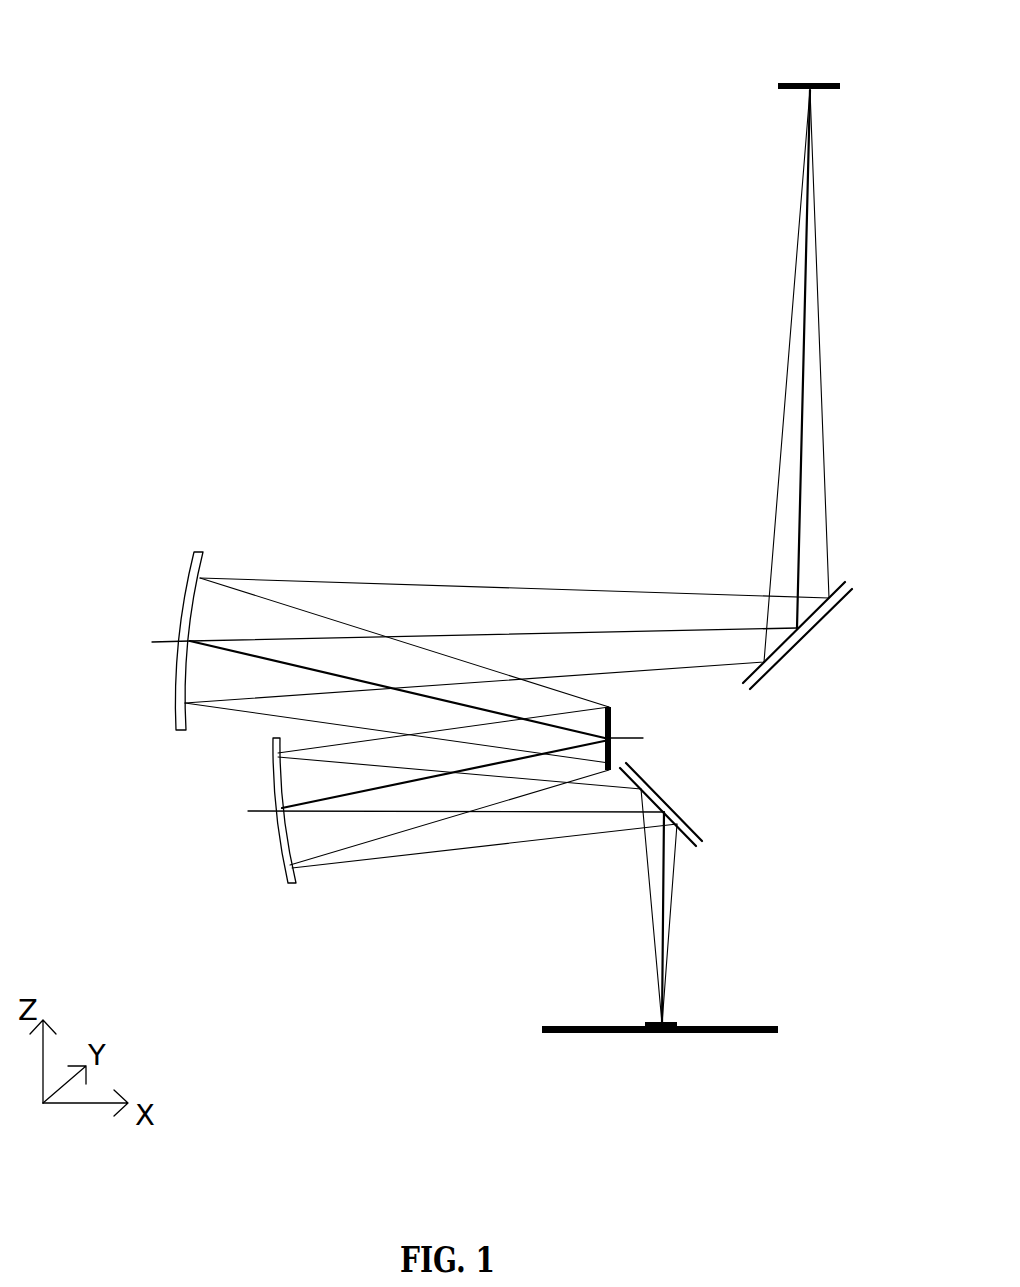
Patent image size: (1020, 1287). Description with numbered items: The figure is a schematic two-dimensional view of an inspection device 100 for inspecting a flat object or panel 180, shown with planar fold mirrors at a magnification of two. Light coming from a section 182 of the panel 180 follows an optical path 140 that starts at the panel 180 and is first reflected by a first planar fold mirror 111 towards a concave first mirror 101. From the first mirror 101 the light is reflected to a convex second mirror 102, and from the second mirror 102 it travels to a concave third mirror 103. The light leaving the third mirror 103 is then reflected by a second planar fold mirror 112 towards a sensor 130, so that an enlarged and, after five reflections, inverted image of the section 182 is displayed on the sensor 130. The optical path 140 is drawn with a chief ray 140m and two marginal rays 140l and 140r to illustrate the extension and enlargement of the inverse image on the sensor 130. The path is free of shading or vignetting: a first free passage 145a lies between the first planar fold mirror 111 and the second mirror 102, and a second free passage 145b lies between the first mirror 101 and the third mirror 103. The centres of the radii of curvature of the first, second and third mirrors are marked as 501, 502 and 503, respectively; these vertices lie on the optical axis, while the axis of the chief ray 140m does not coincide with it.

The inspection device 100 is at (258, 100).
The sensor 130 is at (795, 83).
The optical path 140 is at (465, 475).
The marginal ray 140l is at (790, 335).
The marginal ray 140r is at (727, 597).
The chief ray 140m is at (600, 632).
The second planar fold mirror 112 is at (838, 597).
The third mirror 103 is at (195, 566).
The centre of radius of curvature of third mirror 503 is at (157, 640).
The second mirror 102 is at (611, 715).
The centre of radius of curvature of second mirror 502 is at (632, 740).
The first free passage 145a is at (620, 752).
The second free passage 145b is at (240, 733).
The first planar fold mirror 111 is at (698, 838).
The first mirror 101 is at (285, 873).
The centre of radius of curvature of first mirror 501 is at (252, 813).
The section 182 is at (663, 1021).
The panel 180 is at (690, 1033).